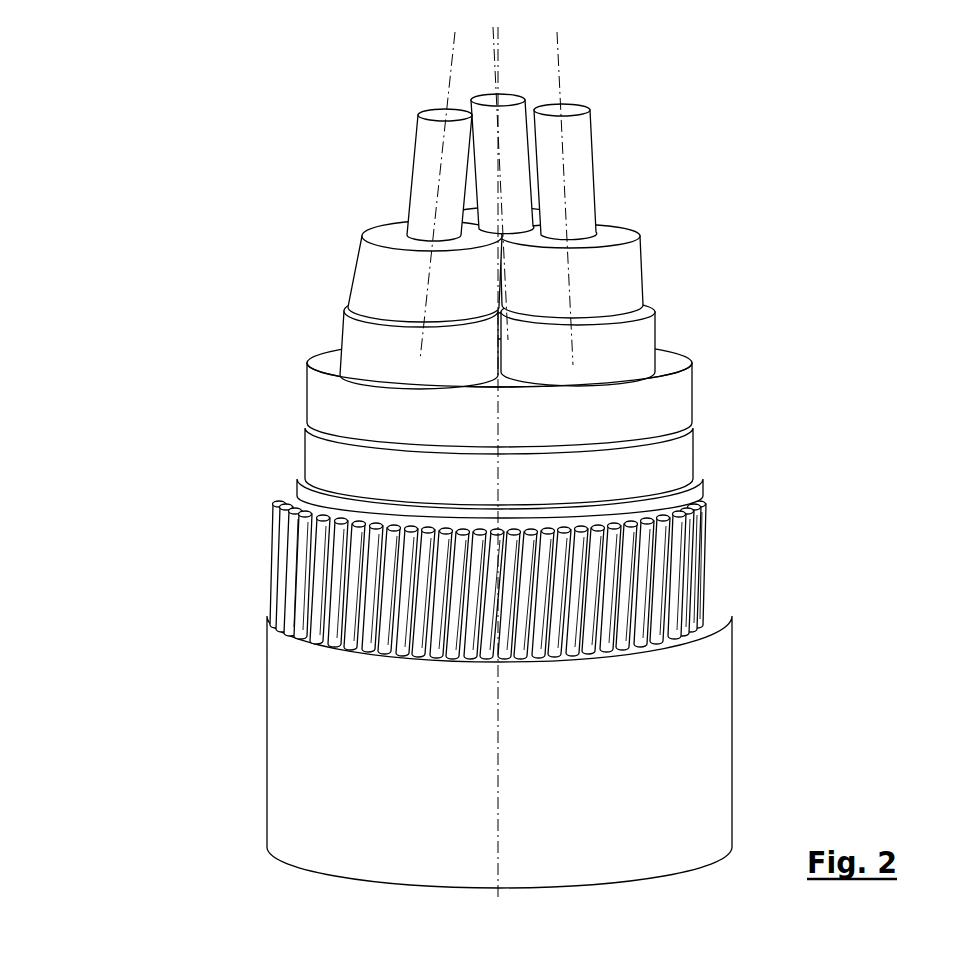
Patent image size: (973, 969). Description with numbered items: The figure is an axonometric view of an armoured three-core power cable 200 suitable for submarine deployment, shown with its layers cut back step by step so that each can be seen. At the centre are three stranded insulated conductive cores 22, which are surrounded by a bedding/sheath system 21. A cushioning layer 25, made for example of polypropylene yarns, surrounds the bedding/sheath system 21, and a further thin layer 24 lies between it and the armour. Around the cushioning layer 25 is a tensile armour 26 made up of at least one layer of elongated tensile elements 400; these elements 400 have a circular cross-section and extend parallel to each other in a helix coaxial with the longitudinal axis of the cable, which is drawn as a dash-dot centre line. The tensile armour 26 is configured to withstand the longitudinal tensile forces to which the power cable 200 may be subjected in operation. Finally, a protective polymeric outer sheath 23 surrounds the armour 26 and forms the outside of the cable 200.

The armoured three-core power cable 200 is at (698, 285).
The bedding/sheath system 21 is at (673, 393).
The stranded insulated conductive cores 22 is at (298, 106).
The protective polymeric outer sheath 23 is at (690, 728).
The bedding layer 24 is at (693, 500).
The cushioning layer 25 is at (320, 458).
The tensile armour 26 is at (725, 553).
The elongated tensile elements 400 is at (296, 545).